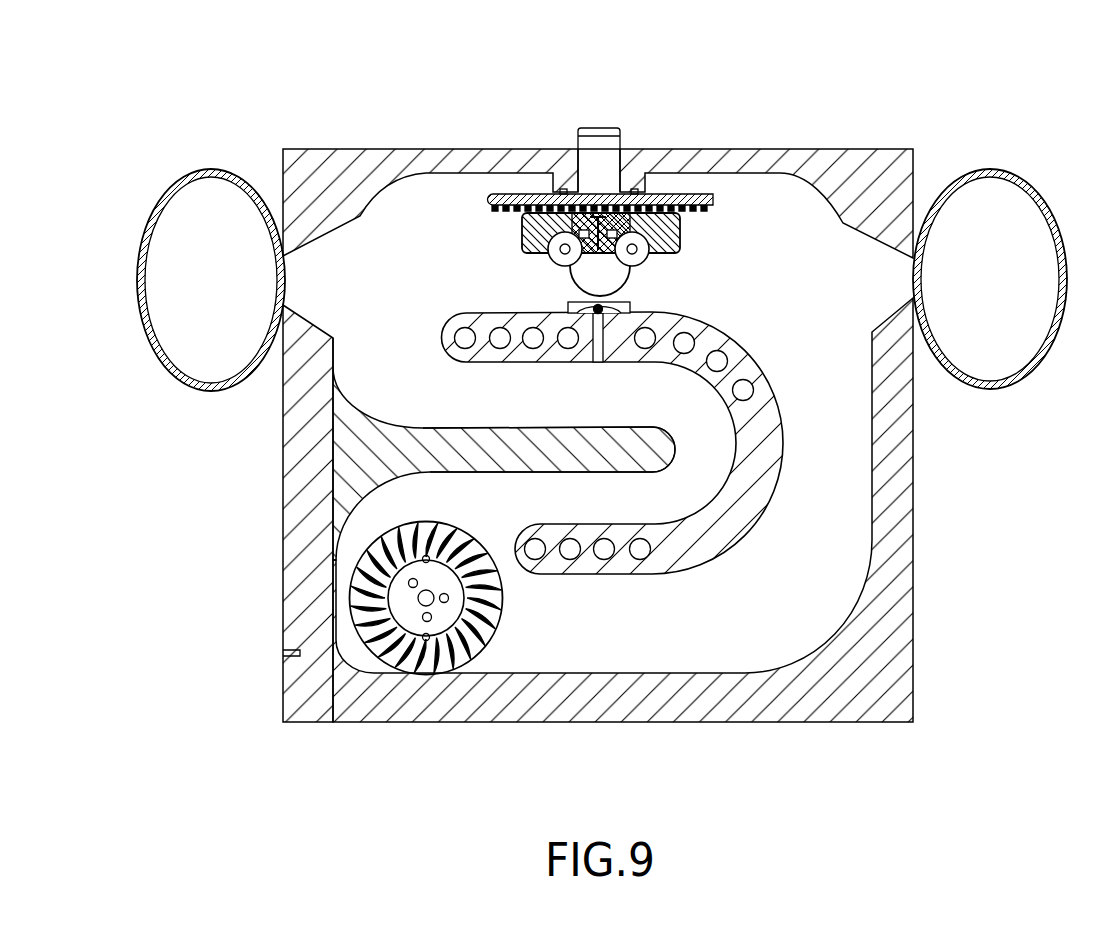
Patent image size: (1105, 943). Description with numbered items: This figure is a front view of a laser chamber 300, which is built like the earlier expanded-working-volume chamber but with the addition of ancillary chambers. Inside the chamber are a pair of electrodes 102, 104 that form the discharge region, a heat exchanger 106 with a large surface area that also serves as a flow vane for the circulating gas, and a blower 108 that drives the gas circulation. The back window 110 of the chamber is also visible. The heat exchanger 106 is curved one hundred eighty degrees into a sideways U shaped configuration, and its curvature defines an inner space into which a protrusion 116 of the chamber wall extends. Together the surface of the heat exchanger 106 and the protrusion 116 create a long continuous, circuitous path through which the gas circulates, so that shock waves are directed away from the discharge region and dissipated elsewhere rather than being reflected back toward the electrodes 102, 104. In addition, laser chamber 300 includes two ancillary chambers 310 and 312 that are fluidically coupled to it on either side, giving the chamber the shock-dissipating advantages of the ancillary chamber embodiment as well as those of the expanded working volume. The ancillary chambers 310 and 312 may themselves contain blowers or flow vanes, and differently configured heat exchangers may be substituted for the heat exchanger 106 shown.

The laser chamber 300 is at (940, 104).
The ancillary chamber 310 is at (207, 392).
The ancillary chamber 312 is at (989, 385).
The electrode 102 is at (683, 240).
The electrode 104 is at (632, 302).
The heat exchanger 106 is at (784, 447).
The blower 108 is at (501, 622).
The back window 110 is at (586, 279).
The protrusion 116 is at (590, 473).